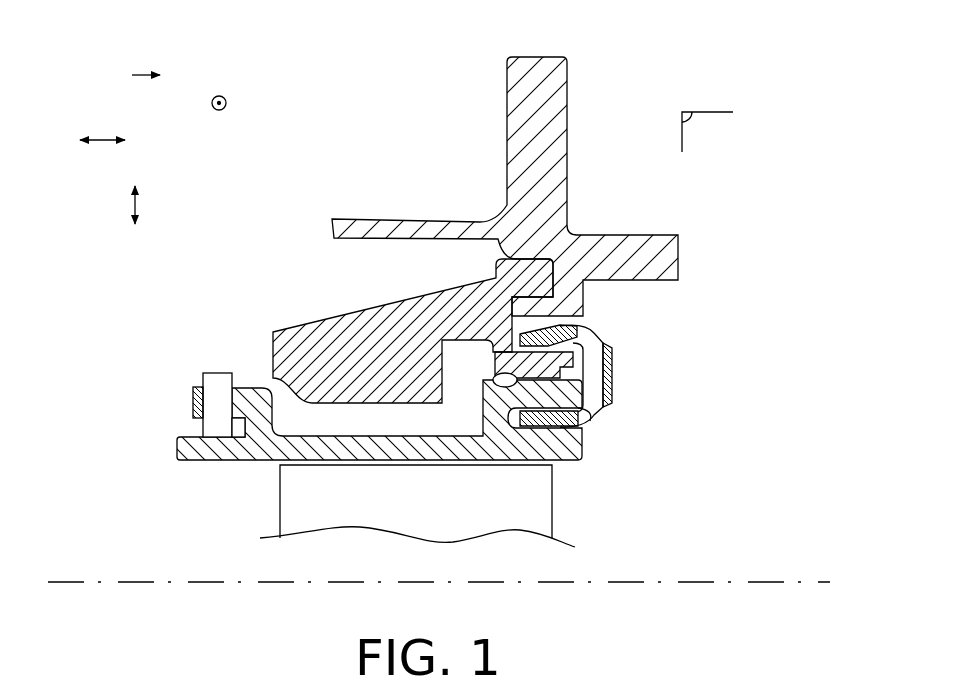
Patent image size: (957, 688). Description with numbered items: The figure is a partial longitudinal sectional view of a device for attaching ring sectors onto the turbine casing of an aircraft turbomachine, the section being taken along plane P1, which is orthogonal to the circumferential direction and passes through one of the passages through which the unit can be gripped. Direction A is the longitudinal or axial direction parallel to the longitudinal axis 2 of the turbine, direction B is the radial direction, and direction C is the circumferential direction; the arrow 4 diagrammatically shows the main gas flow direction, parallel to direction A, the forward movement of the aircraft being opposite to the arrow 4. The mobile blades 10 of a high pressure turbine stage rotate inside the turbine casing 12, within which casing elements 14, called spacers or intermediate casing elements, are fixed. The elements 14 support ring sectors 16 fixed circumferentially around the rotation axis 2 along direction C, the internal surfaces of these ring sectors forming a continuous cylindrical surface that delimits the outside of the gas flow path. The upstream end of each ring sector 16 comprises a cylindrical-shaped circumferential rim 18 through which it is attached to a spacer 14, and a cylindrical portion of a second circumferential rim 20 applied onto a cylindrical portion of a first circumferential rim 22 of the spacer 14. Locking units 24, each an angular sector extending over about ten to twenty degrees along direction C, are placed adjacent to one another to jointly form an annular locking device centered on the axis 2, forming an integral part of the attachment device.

The longitudinal axis 2 is at (120, 582).
The arrow 4 is at (148, 72).
The mobile blades 10 is at (527, 507).
The turbine casing 12 is at (402, 230).
The casing elements 14 is at (318, 333).
The ring sectors 16 is at (257, 448).
The circumferential rim 18 is at (212, 403).
The second circumferential rim 20 is at (590, 413).
The first circumferential rim 22 is at (573, 365).
The locking unit 24 is at (605, 330).
The longitudinal direction A is at (100, 138).
The radial direction B is at (137, 203).
The circumferential direction C is at (226, 100).
The plane P1 is at (692, 112).